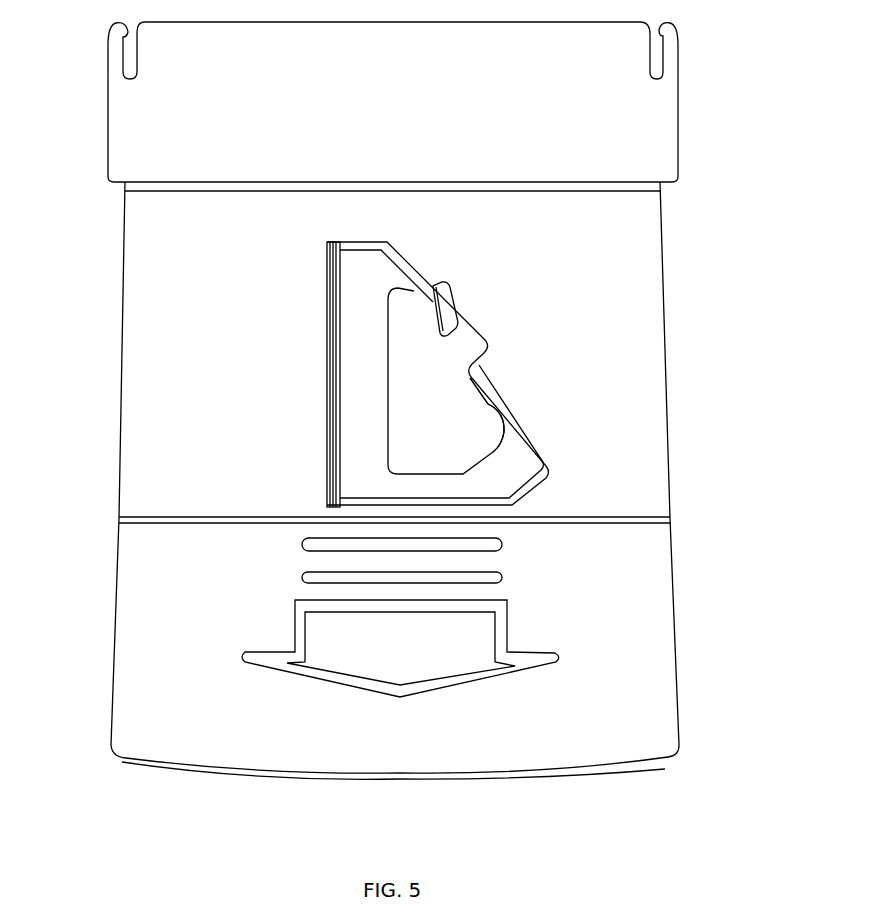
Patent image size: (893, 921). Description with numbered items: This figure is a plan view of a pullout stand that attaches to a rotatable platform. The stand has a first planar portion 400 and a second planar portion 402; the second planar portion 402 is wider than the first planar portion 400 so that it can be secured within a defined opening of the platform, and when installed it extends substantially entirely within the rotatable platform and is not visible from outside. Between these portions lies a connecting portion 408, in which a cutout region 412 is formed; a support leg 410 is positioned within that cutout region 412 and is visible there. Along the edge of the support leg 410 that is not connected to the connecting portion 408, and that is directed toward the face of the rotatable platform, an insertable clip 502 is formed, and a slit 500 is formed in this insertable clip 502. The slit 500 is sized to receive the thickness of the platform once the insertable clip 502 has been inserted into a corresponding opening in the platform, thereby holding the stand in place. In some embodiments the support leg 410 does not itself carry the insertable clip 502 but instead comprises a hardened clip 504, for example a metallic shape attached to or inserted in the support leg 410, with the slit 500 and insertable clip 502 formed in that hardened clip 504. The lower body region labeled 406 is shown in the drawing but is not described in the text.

The first planar portion 400 is at (701, 388).
The second planar portion 402 is at (614, 91).
The lower body section 406 is at (628, 575).
The connecting portion 408 is at (626, 240).
The support leg 410 is at (362, 333).
The cutout region 412 is at (338, 230).
The slit 500 is at (278, 381).
The insertable clip 502 is at (428, 286).
The hardened clip 504 is at (597, 448).